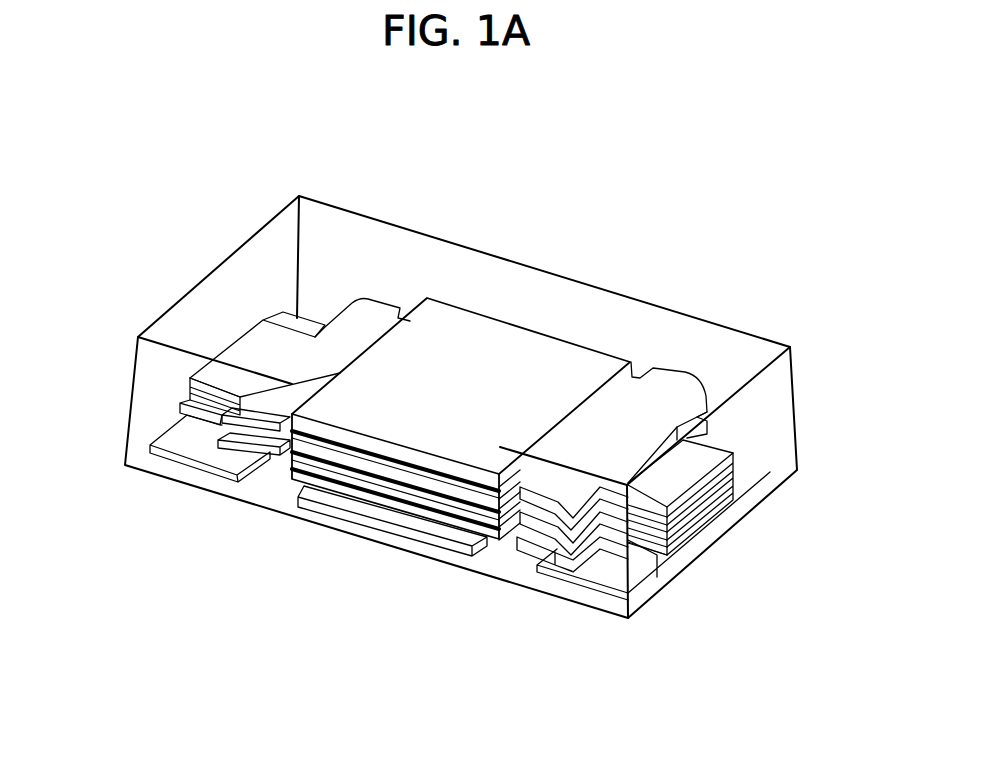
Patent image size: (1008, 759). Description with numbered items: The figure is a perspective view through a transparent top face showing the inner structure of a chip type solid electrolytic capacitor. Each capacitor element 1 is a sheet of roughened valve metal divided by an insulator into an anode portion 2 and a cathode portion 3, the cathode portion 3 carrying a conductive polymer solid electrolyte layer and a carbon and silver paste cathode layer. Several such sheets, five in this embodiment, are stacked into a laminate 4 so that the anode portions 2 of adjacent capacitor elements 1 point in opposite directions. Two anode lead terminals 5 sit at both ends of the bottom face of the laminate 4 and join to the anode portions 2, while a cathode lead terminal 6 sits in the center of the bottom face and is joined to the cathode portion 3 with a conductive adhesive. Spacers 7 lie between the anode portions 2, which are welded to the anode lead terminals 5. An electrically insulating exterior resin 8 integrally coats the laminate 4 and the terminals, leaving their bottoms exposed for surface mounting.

The capacitor element 1 is at (682, 257).
The anode portion 2 is at (380, 305).
The cathode portion 3 is at (527, 352).
The capacitor element-laminate 4 is at (714, 218).
The anode lead terminal 5 is at (192, 440).
The cathode lead terminal 6 is at (388, 515).
The spacer 7 is at (186, 392).
The exterior resin 8 is at (770, 413).